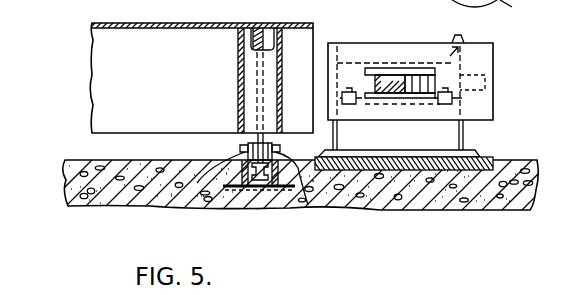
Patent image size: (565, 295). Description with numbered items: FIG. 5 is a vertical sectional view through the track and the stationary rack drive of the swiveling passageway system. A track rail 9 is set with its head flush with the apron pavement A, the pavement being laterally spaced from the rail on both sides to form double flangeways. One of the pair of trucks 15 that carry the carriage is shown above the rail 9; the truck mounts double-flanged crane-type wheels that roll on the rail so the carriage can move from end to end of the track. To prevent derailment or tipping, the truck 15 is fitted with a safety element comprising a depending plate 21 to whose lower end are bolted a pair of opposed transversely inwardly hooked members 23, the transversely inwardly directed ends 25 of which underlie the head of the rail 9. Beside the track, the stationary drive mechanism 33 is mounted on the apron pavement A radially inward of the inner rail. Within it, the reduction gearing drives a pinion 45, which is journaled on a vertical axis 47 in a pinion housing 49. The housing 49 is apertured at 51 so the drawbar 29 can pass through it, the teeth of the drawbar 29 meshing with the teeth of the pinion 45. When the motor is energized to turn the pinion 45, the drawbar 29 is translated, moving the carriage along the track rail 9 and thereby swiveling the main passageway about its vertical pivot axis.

The truck 15 is at (180, 78).
The depending plate 21 is at (247, 147).
The track rail 9 is at (261, 190).
The transversely inwardly directed end 25 is at (250, 188).
The transversely inwardly hooked member 23 is at (197, 183).
The stationary drive mechanism 33 is at (494, 63).
The vertical axis 47 is at (476, 35).
The drawbar 29 is at (383, 76).
The aperture 51 is at (393, 68).
The pinion 45 is at (418, 72).
The pinion housing 49 is at (497, 104).
The apron pavement A is at (516, 158).